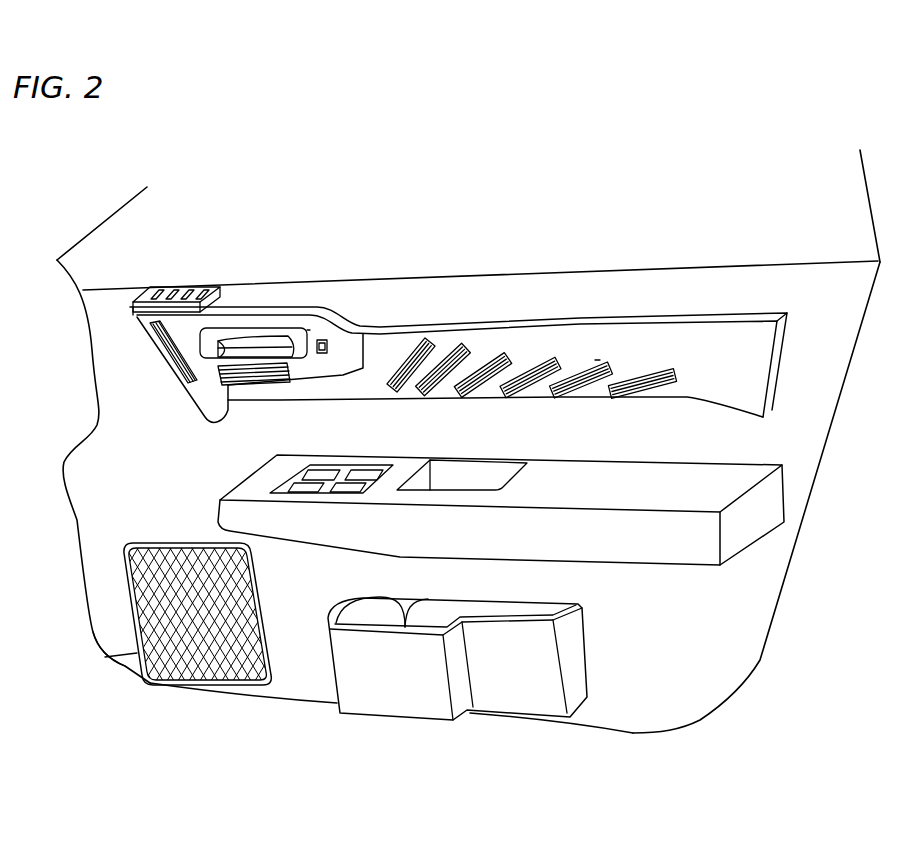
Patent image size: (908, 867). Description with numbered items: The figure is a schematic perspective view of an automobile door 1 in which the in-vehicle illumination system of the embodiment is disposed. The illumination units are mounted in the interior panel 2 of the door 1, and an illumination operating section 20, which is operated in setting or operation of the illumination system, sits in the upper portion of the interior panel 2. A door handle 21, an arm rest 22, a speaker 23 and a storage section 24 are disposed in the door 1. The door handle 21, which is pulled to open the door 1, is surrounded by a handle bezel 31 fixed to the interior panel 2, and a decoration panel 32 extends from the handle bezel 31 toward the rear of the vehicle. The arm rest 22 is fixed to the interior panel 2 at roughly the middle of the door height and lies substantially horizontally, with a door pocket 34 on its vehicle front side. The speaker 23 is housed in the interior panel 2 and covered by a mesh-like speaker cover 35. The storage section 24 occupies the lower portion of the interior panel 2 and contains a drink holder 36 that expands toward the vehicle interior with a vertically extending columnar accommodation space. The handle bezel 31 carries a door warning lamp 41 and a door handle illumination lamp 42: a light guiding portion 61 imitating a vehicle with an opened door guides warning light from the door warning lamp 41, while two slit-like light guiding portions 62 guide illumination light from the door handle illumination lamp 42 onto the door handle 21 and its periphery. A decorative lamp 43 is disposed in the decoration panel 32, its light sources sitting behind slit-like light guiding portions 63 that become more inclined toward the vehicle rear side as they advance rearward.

The door 1 is at (738, 256).
The interior panel 2 is at (806, 430).
The illumination operating section 20 is at (194, 285).
The door handle 21 is at (262, 336).
The arm rest 22 is at (653, 548).
The speaker 23 is at (105, 661).
The storage section 24 is at (457, 670).
The handle bezel 31 is at (237, 312).
The decoration panel 32 is at (578, 343).
The door pocket 34 is at (473, 478).
The speaker cover 35 is at (153, 679).
The drink holder 36 is at (382, 612).
The door warning lamp 41 is at (317, 324).
The door handle illumination lamp 42 is at (200, 394).
The decorative lamp 43 is at (600, 352).
The light guiding portion 61 is at (329, 344).
The light guiding portions 62 is at (153, 352).
The light guiding portions 63 is at (490, 350).